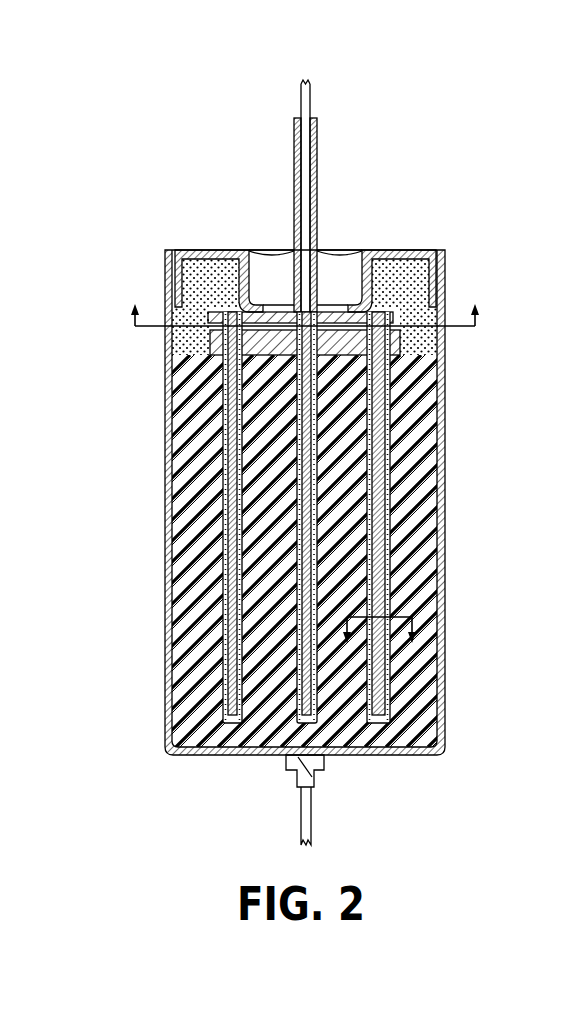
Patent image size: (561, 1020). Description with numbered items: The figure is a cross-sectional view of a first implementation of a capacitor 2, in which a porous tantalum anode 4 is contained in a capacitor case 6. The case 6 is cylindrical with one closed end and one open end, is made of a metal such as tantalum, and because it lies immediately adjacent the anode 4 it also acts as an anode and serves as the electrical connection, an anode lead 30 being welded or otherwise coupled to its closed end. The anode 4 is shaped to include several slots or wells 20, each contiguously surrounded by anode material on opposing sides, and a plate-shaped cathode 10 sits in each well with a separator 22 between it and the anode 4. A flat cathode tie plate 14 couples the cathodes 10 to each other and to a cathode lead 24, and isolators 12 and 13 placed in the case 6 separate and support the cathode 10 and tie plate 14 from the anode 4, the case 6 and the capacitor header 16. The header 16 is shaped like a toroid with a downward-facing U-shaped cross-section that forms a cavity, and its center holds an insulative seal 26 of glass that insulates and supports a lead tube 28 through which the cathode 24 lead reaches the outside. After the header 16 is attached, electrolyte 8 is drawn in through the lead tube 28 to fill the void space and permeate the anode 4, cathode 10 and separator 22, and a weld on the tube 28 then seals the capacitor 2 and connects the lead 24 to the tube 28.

The capacitor 2 is at (475, 206).
The porous tantalum anode 4 is at (422, 438).
The capacitor case 6 is at (447, 517).
The electrolyte 8 is at (423, 332).
The cathode 10 is at (223, 612).
The isolator 12 is at (180, 345).
The isolator 13 is at (439, 316).
The cathode tie plate 14 is at (178, 333).
The capacitor header 16 is at (213, 243).
The slots or wells 20 is at (272, 561).
The separator 22 is at (227, 545).
The cathode lead 24 is at (311, 108).
The insulative seal 26 is at (339, 254).
The lead tube 28 is at (318, 166).
The anode lead 30 is at (312, 813).